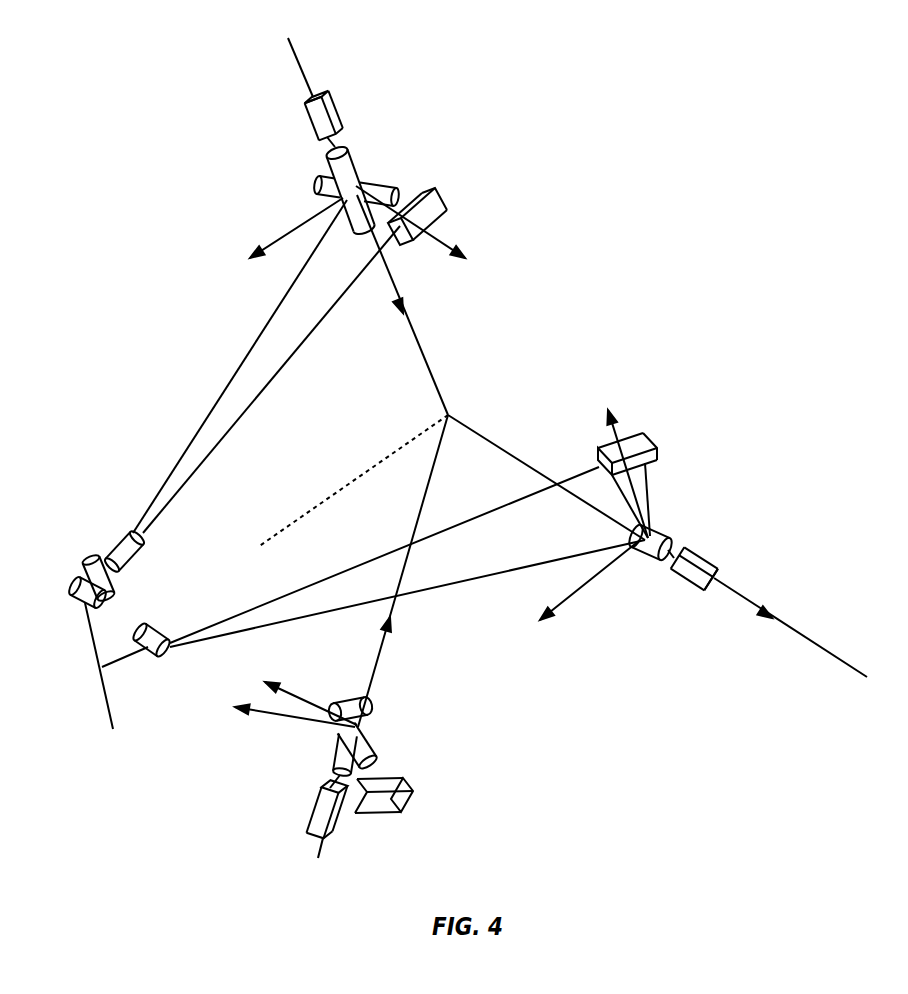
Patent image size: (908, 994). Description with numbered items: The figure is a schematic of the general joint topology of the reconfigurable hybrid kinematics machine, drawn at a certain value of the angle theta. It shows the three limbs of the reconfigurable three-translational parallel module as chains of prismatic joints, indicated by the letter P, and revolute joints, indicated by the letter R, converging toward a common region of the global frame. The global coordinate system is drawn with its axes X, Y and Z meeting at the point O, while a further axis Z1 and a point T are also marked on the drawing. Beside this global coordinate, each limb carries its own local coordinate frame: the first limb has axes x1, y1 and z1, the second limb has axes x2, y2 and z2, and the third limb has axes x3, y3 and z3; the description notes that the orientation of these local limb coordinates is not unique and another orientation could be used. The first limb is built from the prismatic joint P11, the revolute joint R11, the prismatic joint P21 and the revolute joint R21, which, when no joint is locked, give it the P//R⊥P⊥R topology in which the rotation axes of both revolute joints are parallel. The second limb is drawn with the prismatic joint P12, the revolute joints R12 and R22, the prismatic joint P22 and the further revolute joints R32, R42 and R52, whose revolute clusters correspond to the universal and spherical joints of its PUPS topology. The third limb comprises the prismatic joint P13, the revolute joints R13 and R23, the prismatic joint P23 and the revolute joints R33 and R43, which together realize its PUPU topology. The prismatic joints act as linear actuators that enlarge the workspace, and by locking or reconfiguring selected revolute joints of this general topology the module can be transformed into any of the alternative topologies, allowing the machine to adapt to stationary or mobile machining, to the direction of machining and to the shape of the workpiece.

The prismatic joint of limb two P12 is at (330, 109).
The revolute joint of limb two R12 is at (352, 183).
The revolute joint of limb two R22 is at (360, 181).
The prismatic joint of limb two P22 is at (429, 216).
The revolute joint of limb two R32 is at (126, 558).
The revolute joint of limb two R42 is at (89, 562).
The revolute joint of limb two R52 is at (73, 595).
The revolute joint of limb one R11 is at (656, 530).
The prismatic joint of limb one P11 is at (698, 561).
The prismatic joint of limb one P21 is at (637, 439).
The revolute joint of limb one R21 is at (155, 626).
The revolute joint of limb three R13 is at (365, 699).
The revolute joint of limb three R23 is at (372, 747).
The revolute joint of limb three R33 is at (357, 790).
The revolute joint of limb three R43 is at (338, 733).
The prismatic joint of limb three P23 is at (397, 796).
The prismatic joint of limb three P13 is at (338, 818).
The global coordinate axis X is at (879, 683).
The global coordinate axis Y is at (277, 25).
The global coordinate axis Z is at (249, 550).
The Z' axis Z1 is at (317, 879).
The origin O is at (456, 405).
The point T is at (83, 673).
The local limb coordinate axis x1 is at (768, 627).
The local limb coordinate axis y1 is at (622, 462).
The local limb coordinate axis z1 is at (576, 588).
The local limb coordinate axis x2 is at (390, 322).
The local limb coordinate axis y2 is at (425, 236).
The local limb coordinate axis z2 is at (278, 240).
The local limb coordinate axis x3 is at (401, 629).
The local limb coordinate axis y3 is at (302, 691).
The local limb coordinate axis z3 is at (283, 713).